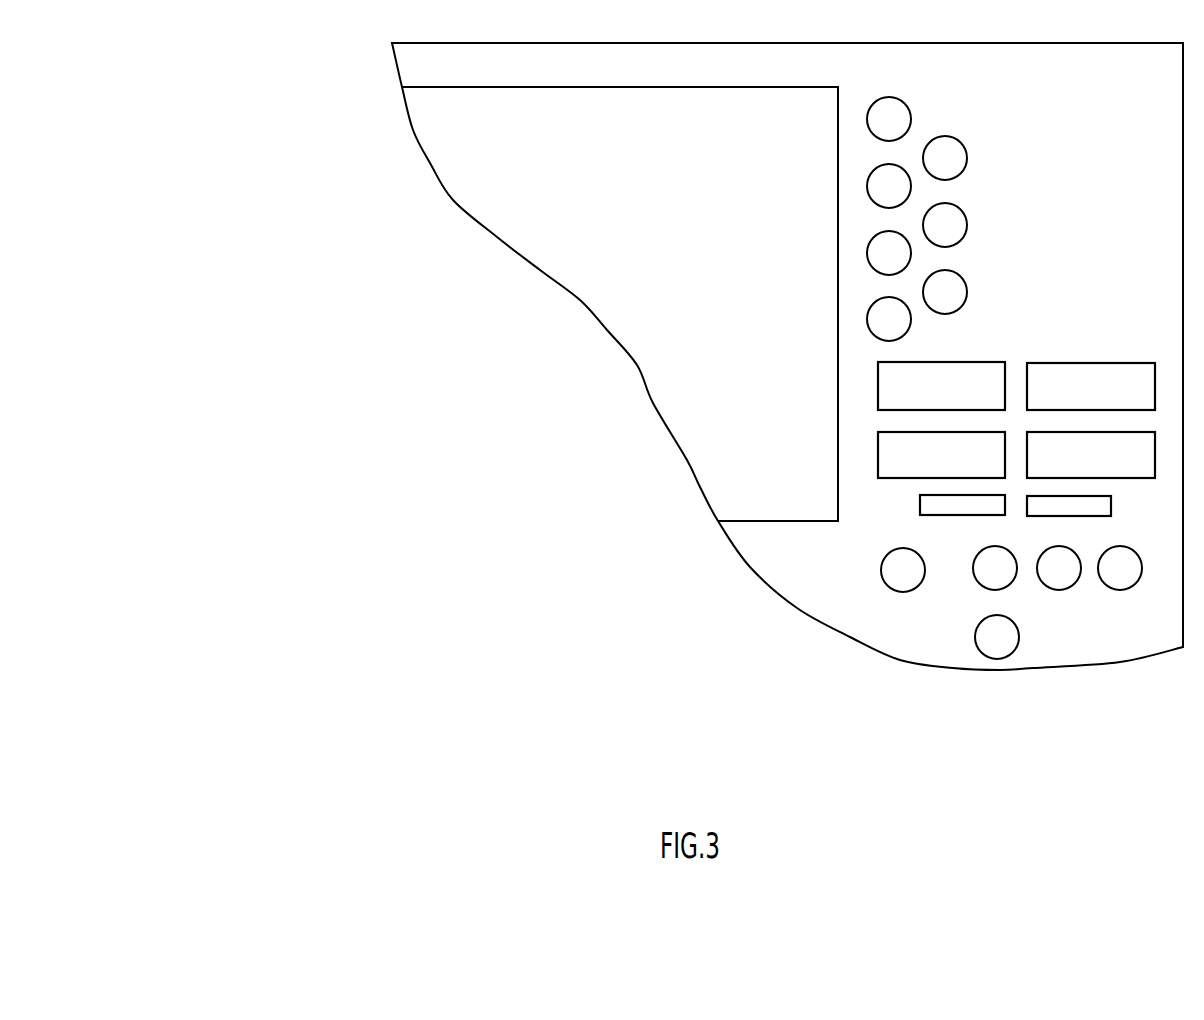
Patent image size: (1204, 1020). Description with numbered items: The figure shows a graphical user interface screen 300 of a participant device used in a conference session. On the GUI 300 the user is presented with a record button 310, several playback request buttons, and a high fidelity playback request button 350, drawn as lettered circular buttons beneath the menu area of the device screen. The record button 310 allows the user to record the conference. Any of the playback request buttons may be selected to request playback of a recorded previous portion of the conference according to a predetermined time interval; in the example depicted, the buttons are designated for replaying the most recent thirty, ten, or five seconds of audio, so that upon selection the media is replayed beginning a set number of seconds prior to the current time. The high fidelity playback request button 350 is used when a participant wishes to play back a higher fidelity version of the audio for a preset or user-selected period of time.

The graphical user interface screen 300 is at (257, 291).
The record button 310 is at (881, 570).
The high fidelity playback request button 350 is at (997, 660).